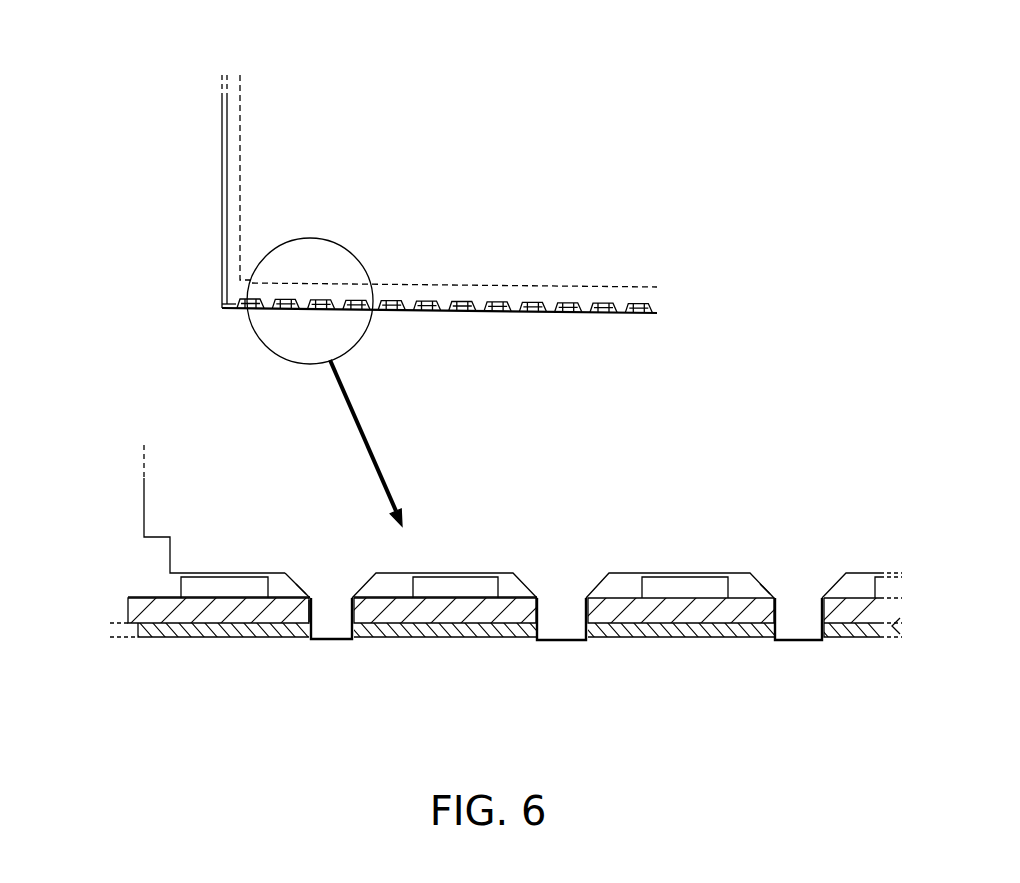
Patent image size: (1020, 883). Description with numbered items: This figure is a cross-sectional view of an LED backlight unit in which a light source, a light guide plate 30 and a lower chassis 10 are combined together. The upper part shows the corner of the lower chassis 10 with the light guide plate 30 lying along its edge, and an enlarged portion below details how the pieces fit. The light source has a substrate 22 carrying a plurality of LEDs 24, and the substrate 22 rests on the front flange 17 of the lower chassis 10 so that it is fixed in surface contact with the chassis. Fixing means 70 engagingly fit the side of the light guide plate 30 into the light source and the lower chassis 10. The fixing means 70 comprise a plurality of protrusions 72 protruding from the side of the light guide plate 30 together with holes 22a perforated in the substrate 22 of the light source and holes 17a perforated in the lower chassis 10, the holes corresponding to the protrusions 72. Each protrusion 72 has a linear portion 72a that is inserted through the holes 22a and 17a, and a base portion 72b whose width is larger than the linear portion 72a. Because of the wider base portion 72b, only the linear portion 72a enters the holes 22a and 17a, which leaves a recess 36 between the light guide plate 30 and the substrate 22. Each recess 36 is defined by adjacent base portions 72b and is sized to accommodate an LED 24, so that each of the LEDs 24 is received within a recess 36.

The lower chassis 10 is at (228, 229).
The light guide plate 30 is at (490, 248).
The LEDs 24 is at (356, 313).
The protrusions 72 is at (275, 305).
The linear portion 72a is at (392, 633).
The base portion 72b is at (388, 575).
The substrate 22 is at (130, 612).
The holes 22a is at (317, 642).
The front flange 17 is at (190, 634).
The holes 17a is at (347, 642).
The recess 36 is at (623, 583).
The fixing means 70 is at (121, 583).